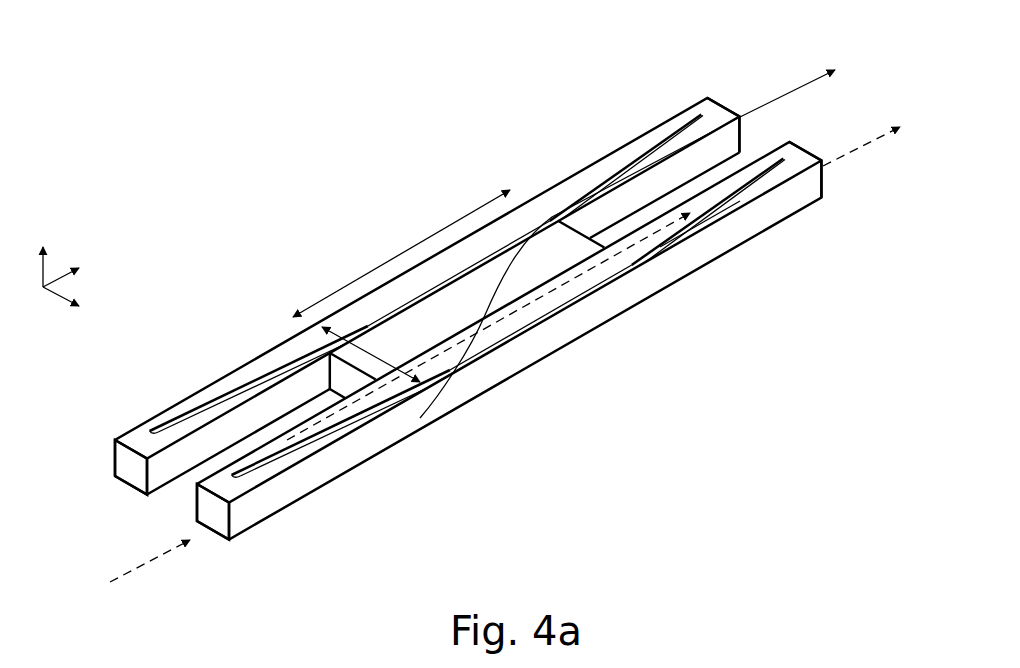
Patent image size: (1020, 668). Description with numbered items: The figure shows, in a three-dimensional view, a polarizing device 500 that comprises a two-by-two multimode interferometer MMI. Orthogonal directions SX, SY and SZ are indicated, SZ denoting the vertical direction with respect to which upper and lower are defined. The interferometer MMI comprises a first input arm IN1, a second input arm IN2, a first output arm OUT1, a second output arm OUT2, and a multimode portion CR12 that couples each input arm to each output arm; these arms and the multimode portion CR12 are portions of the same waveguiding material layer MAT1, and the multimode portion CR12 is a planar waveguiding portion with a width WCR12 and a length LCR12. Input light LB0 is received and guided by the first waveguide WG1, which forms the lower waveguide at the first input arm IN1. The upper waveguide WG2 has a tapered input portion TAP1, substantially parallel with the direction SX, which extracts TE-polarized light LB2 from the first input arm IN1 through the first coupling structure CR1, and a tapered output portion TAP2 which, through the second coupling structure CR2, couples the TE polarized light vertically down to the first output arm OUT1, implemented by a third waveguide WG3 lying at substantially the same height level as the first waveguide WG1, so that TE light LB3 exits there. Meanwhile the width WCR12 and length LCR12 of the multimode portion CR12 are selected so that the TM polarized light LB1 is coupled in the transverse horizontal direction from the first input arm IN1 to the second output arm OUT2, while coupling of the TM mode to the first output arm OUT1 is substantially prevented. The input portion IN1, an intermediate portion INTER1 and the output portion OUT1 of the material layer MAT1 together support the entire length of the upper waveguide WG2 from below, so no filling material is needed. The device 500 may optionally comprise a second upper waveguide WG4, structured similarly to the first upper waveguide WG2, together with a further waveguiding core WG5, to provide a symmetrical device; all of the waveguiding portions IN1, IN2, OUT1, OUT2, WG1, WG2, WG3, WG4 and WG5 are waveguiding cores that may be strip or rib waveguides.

The polarizing device 500 is at (222, 145).
The 2x2 multimode interferometer MMI is at (222, 195).
The direction SX is at (77, 265).
The direction SY is at (79, 306).
The direction SZ is at (41, 251).
The waveguiding material layer MAT1 is at (660, 123).
The first input arm IN1 is at (240, 521).
The second input arm IN2 is at (128, 430).
The first output arm OUT1 is at (808, 190).
The second output arm OUT2 is at (698, 99).
The first waveguide WG1 is at (392, 434).
The second waveguide WG2 is at (505, 333).
The third waveguide WG3 is at (788, 214).
The second upper waveguide WG4 is at (282, 334).
The fifth waveguide WG5 is at (604, 156).
The tapered input portion TAP1 is at (253, 498).
The tapered output portion TAP2 is at (793, 183).
The first coupling structure CR1 is at (364, 473).
The second coupling structure CR2 is at (730, 258).
The multimode portion CR12 is at (462, 300).
The length of the multimode portion LCR12 is at (401, 253).
The width of the multimode portion WCR12 is at (371, 354).
The intermediate portion INTER1 is at (640, 308).
The input light LB0 is at (142, 565).
The TM polarized output light LB1 is at (808, 82).
The TE-polarized light LB2 is at (544, 293).
The TE polarized output light LB3 is at (885, 128).